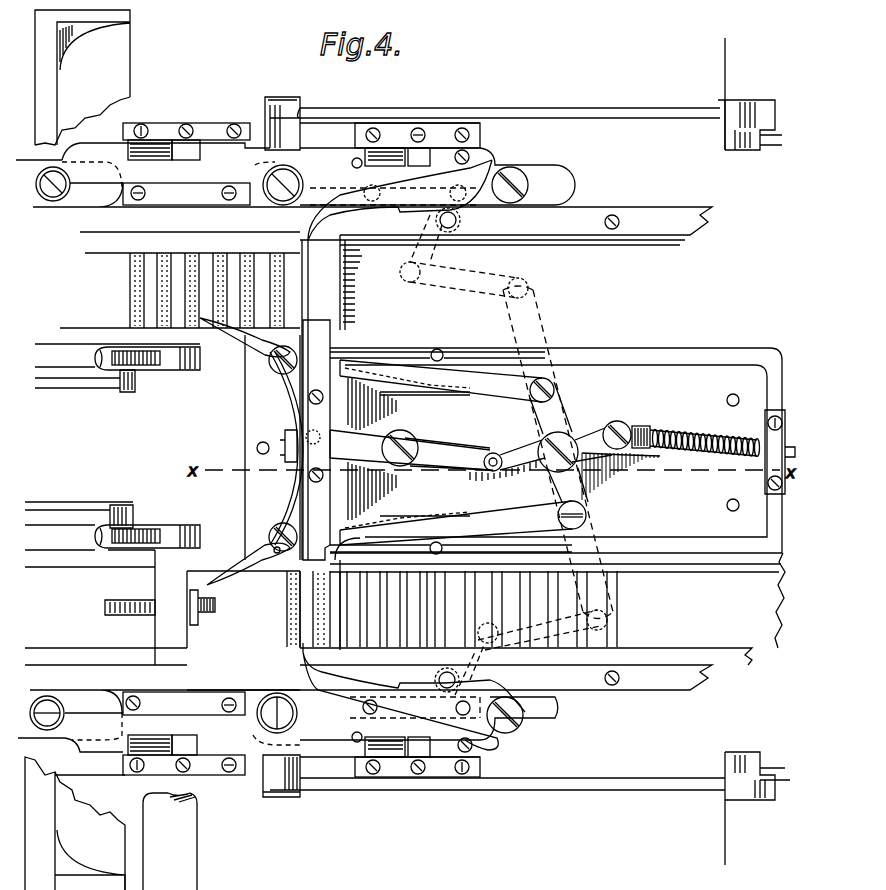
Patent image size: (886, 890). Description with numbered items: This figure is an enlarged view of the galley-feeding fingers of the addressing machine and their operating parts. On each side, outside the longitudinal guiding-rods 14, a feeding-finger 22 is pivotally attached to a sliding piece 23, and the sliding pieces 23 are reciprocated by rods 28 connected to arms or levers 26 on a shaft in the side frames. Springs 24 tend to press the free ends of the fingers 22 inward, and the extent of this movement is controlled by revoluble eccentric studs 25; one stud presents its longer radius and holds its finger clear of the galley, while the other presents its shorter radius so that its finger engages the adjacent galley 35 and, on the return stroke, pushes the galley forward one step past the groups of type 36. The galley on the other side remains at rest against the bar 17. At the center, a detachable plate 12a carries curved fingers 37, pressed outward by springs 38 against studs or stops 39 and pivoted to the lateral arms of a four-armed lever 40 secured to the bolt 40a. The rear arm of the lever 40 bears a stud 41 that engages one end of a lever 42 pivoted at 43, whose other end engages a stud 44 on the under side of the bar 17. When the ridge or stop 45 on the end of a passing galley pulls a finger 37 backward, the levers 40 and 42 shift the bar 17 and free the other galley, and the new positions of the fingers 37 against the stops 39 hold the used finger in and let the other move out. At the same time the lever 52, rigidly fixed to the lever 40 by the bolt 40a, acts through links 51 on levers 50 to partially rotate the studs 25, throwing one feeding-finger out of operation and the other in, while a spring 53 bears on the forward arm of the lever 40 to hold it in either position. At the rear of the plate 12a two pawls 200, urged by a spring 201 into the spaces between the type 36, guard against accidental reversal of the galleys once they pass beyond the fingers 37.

The detachable plate 12a is at (630, 365).
The rods 14 is at (640, 235).
The bar 17 is at (316, 440).
The feeding-fingers 22 is at (422, 200).
The sliding pieces 23 is at (159, 447).
The springs 24 is at (455, 172).
The eccentric studs 25 is at (460, 221).
The arms or levers 26 is at (760, 150).
The rods 28 is at (572, 110).
The galley 35 is at (112, 322).
The groups of type 36 is at (250, 258).
The curved fingers 37 is at (448, 398).
The springs 38 is at (447, 402).
The studs or stops 39 is at (437, 349).
The four-armed lever 40 is at (545, 433).
The bolt 40a is at (612, 428).
The stud 41 is at (497, 455).
The lever 42 is at (457, 442).
The pivot 43 is at (405, 428).
The stud 44 is at (287, 430).
The ridge or stop 45 is at (348, 442).
The levers 50 is at (400, 265).
The links 51 is at (484, 275).
The lever 52 is at (540, 335).
The spring 53 is at (703, 435).
The pawls 200 is at (240, 352).
The spring 201 is at (283, 515).